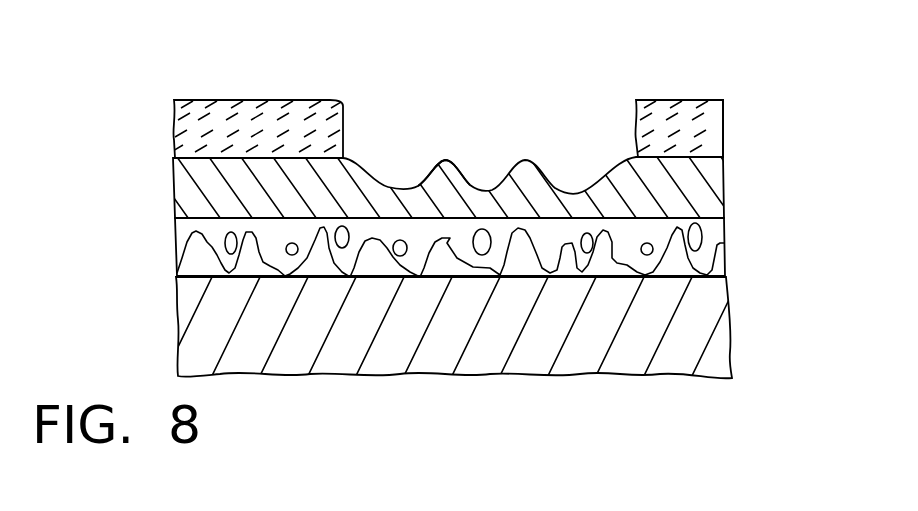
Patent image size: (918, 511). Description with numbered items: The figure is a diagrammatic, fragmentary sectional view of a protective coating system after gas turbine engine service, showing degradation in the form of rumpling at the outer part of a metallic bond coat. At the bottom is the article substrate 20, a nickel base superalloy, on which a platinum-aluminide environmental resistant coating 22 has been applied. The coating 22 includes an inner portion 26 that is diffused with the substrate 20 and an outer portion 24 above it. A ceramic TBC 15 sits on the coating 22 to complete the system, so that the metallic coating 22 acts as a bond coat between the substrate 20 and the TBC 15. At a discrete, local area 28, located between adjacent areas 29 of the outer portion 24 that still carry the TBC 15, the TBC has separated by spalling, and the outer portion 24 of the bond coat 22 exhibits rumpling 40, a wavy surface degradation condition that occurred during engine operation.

The adjacent areas 29 is at (240, 100).
The ceramic TBC 15 is at (724, 125).
The outer portion 24 is at (716, 173).
The inner portion 26 is at (712, 243).
The article substrate 20 is at (713, 338).
The discrete, local area 28 is at (489, 86).
The rumpling 40 is at (486, 160).
The environmental resistant coating 22 is at (128, 228).